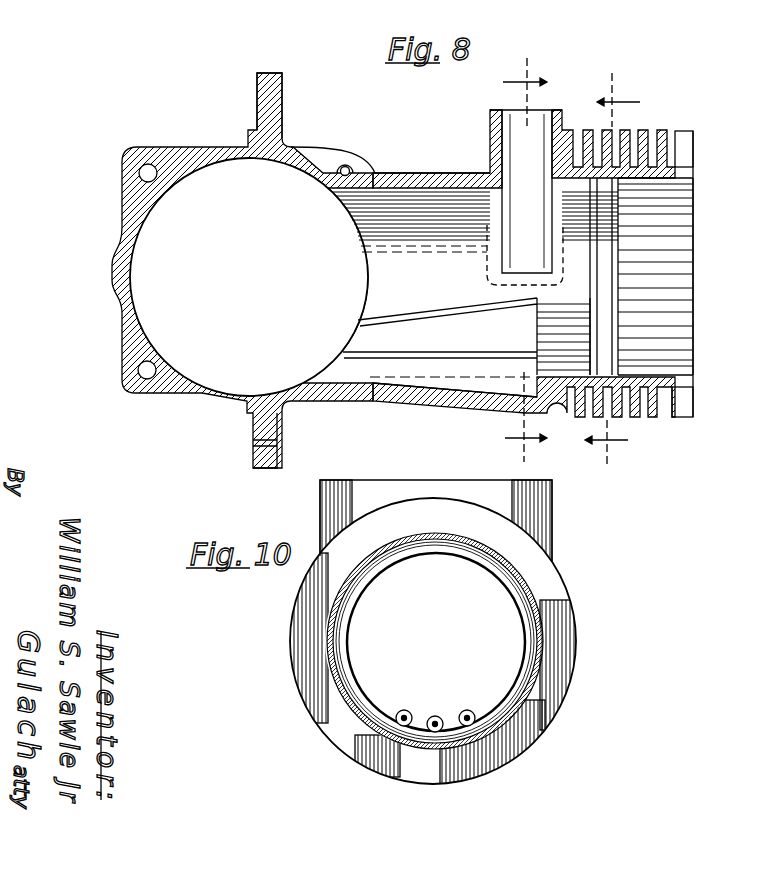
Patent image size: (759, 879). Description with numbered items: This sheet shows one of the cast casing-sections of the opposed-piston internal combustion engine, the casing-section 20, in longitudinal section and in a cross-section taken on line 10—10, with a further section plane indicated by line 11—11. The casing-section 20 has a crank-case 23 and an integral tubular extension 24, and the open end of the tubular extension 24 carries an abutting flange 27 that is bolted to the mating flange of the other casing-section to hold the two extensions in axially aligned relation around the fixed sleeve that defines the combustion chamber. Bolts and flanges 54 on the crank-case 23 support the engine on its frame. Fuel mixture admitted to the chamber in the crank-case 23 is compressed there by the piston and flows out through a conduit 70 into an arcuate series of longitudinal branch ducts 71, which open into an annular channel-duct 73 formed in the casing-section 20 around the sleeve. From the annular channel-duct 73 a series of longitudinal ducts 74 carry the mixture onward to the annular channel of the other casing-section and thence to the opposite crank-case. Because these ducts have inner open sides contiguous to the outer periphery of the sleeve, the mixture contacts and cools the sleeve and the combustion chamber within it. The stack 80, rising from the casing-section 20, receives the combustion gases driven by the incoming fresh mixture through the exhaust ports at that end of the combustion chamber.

In FIG. 8, the casing-section 20 is at (424, 174).
In FIG. 10, the casing-section 20 is at (361, 773).
In FIG. 8, the crank-case 23 is at (208, 147).
In FIG. 8, the tubular extension 24 is at (403, 177).
In FIG. 8, the abutting flange 27 is at (684, 406).
In FIG. 8, the bolts and flanges 54 is at (280, 439).
In FIG. 8, the conduit 70 is at (468, 392).
In FIG. 8, the longitudinal branch ducts 71 is at (548, 318).
In FIG. 10, the longitudinal branch ducts 71 is at (435, 728).
In FIG. 8, the annular channel-duct 73 is at (610, 295).
In FIG. 10, the annular channel-duct 73 is at (521, 722).
In FIG. 8, the longitudinal ducts 74 is at (688, 330).
In FIG. 8, the stack 80 is at (545, 116).
In FIG. 10, the stack 80 is at (470, 480).
In FIG. 8, the section line 10— 10 is at (612, 270).
In FIG. 8, the section line 11— 11 is at (525, 255).